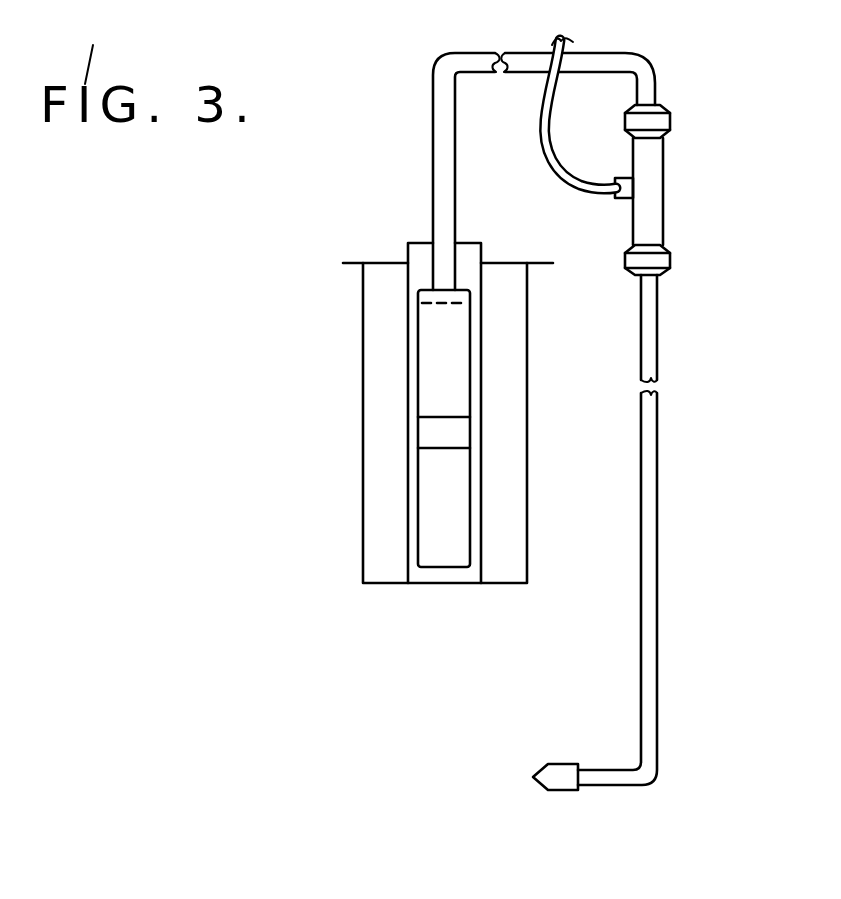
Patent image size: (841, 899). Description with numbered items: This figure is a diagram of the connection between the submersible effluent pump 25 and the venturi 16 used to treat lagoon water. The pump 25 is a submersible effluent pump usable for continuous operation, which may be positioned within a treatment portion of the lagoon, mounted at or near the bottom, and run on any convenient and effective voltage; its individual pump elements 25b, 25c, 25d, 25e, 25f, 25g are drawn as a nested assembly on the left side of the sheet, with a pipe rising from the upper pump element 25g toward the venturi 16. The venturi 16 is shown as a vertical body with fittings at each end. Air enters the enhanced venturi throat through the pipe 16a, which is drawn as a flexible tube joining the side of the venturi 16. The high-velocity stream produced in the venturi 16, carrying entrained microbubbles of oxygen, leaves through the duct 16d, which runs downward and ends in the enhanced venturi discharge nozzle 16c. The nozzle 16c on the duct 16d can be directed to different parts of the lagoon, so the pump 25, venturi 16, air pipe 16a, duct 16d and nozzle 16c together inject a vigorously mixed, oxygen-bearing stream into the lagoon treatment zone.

The venturi 16 is at (672, 192).
The pipe 16a is at (543, 143).
The enhanced venturi discharge nozzle 16c is at (553, 778).
The duct 16d is at (658, 537).
The submersible effluent pump 25 is at (387, 368).
The pump element 25b is at (428, 531).
The pump element 25c is at (363, 492).
The pump element 25d is at (514, 399).
The pump element 25e is at (418, 300).
The pump element 25f is at (353, 265).
The pump element 25g is at (430, 250).